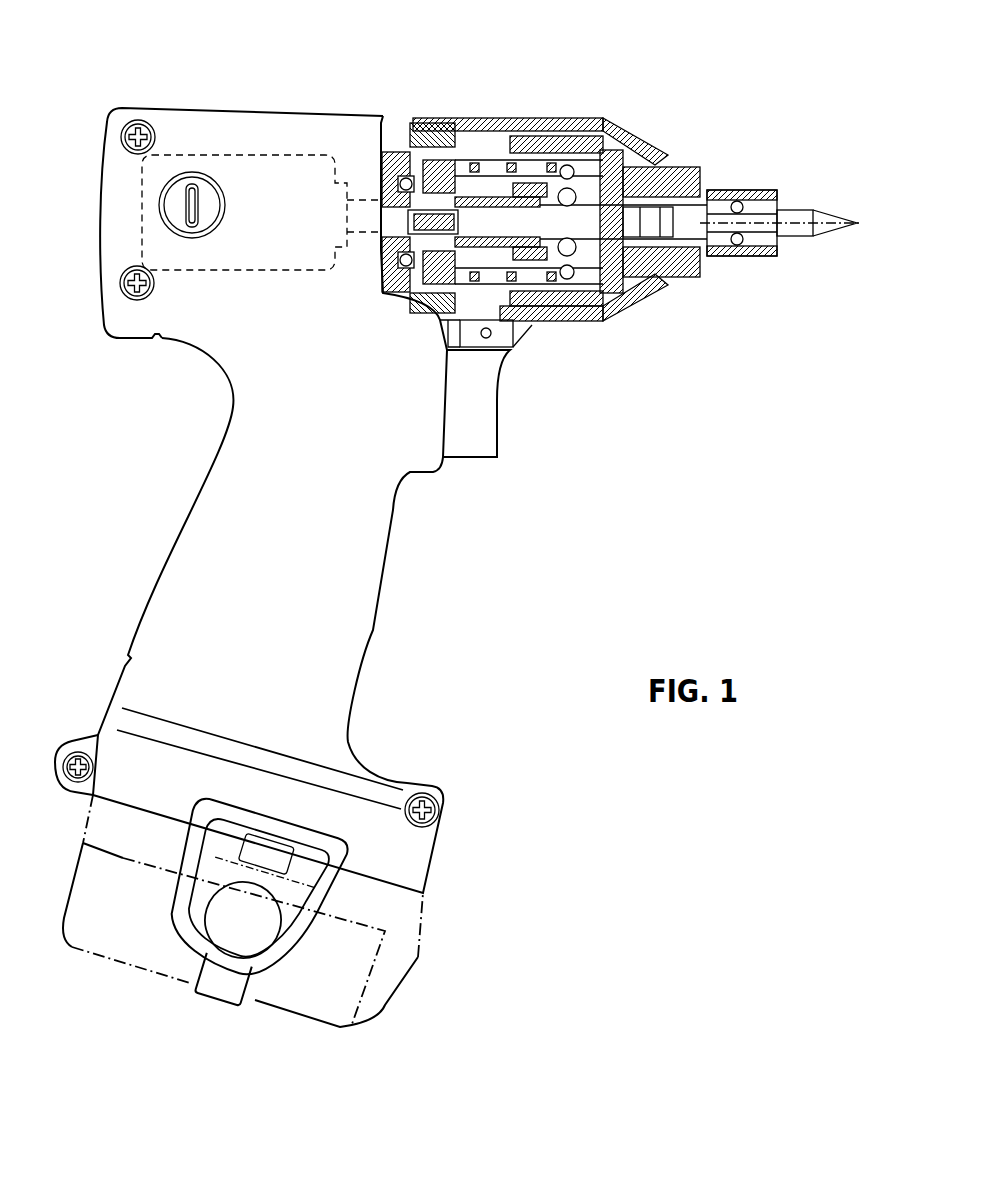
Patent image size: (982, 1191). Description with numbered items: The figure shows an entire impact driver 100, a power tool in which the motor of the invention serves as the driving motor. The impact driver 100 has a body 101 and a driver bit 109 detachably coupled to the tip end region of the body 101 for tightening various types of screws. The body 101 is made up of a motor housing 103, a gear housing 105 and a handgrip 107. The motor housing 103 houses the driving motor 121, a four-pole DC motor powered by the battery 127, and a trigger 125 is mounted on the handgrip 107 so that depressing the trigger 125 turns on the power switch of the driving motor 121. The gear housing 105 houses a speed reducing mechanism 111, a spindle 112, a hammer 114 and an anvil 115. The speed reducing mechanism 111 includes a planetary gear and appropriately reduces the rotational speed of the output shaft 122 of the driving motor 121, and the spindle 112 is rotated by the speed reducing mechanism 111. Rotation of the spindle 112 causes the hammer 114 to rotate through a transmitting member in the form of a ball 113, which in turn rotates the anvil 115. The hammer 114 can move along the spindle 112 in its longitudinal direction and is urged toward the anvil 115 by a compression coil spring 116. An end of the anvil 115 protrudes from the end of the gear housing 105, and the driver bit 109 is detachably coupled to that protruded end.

The impact driver 100 is at (290, 102).
The body 101 is at (482, 116).
The motor housing 103 is at (195, 110).
The gear housing 105 is at (581, 328).
The handgrip 107 is at (388, 567).
The driver bit 109 is at (797, 213).
The speed reducing mechanism 111 is at (397, 150).
The spindle 112 is at (510, 183).
The ball 113 is at (575, 255).
The hammer 114 is at (568, 164).
The anvil 115 is at (667, 153).
The compression coil spring 116 is at (532, 323).
The driving motor 121 is at (197, 272).
The output shaft 122 is at (360, 200).
The trigger 125 is at (475, 407).
The battery 127 is at (187, 984).